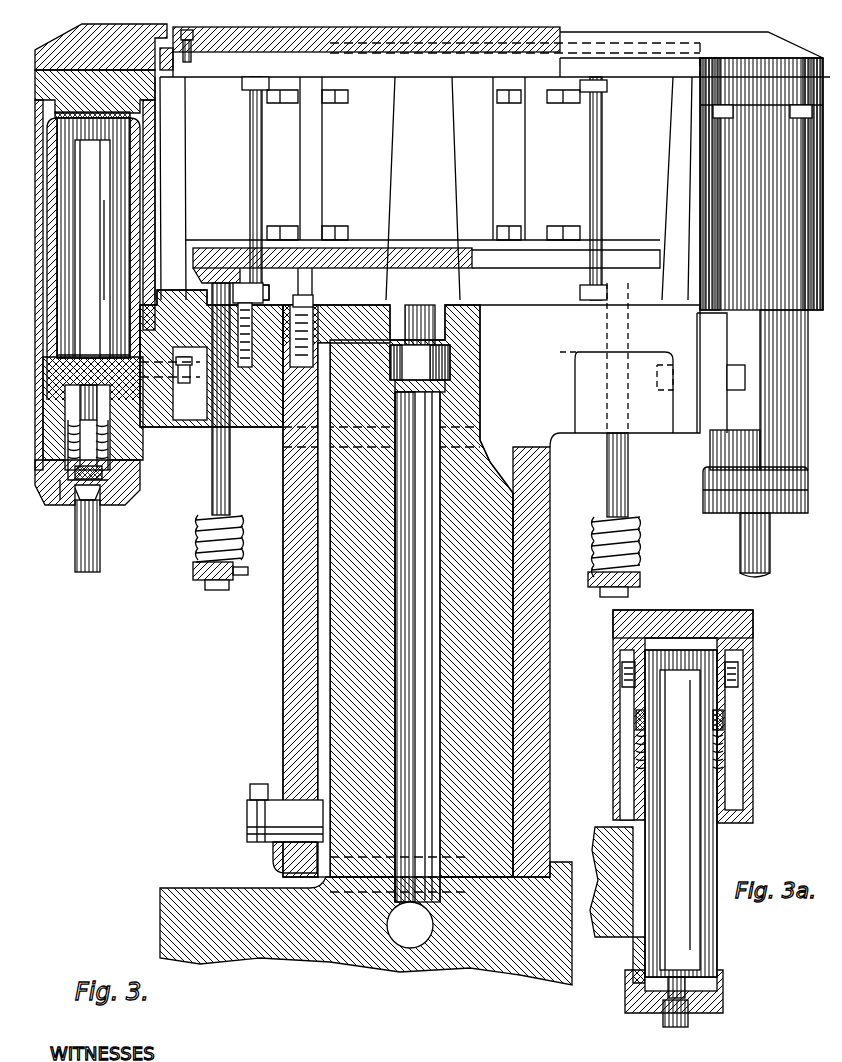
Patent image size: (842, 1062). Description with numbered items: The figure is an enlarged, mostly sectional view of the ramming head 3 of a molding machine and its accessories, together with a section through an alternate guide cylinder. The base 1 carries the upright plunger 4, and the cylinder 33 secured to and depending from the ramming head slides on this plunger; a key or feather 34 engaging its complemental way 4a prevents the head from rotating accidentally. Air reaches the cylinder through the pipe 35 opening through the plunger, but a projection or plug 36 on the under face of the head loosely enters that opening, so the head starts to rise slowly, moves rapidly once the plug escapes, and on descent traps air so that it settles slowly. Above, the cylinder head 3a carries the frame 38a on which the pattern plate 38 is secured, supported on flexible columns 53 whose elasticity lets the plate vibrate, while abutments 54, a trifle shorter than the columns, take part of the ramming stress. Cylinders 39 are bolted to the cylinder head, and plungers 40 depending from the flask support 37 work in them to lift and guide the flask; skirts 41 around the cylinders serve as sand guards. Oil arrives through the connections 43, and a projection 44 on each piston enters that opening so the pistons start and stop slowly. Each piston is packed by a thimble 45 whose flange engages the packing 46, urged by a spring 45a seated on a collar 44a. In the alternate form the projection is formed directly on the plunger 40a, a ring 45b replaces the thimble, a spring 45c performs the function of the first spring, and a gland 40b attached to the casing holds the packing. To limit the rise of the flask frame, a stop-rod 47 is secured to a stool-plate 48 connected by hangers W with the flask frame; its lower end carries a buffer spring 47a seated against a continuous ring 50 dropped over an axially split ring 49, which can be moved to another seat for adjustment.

In FIG. 3, the base 1 is at (366, 921).
In FIG. 3, the ramming head 3 is at (464, 20).
In FIG. 3, the cylinder head 3a is at (586, 358).
In FIG. 3, the plunger 4 is at (338, 610).
In FIG. 3, the complemental way 4a is at (318, 705).
In FIG. 3, the cylinder 33 is at (531, 662).
In FIG. 3, the key or feather 34 is at (285, 828).
In FIG. 3, the pipe 35 is at (410, 925).
In FIG. 3, the projection or plug 36 is at (420, 348).
In FIG. 3, the flask support 37 is at (126, 31).
In FIG. 3, the pattern plate 38 is at (491, 52).
In FIG. 3, the frame 38a is at (495, 64).
In FIG. 3, the cylinder 39 is at (132, 437).
In FIG. 3a, the cylinder 39 is at (735, 960).
In FIG. 3, the plunger 40 is at (93, 259).
In FIG. 3a, the plunger 40a is at (681, 813).
In FIG. 3a, the gland 40b is at (728, 705).
In FIG. 3, the skirt 41 is at (148, 190).
In FIG. 3, the connection 43 is at (422, 538).
In FIG. 3a, the connection 43 is at (675, 1013).
In FIG. 3, the projection 44 is at (100, 500).
In FIG. 3a, the projection 44 is at (683, 985).
In FIG. 3, the collar 44a is at (75, 495).
In FIG. 3, the thimble 45 is at (105, 470).
In FIG. 3, the spring 45a is at (70, 480).
In FIG. 3a, the ring 45b is at (725, 725).
In FIG. 3a, the spring 45c is at (723, 758).
In FIG. 3, the packing 46 is at (112, 460).
In FIG. 3, the stop-rod 47 is at (222, 475).
In FIG. 3, the spring 47a is at (200, 530).
In FIG. 3, the stool-plate 48 is at (365, 250).
In FIG. 3, the axially split ring 49 is at (205, 586).
In FIG. 3, the continuous ring 50 is at (190, 571).
In FIG. 3, the flexible columns 53 is at (250, 176).
In FIG. 3, the abutments 54 is at (423, 188).
In FIG. 3, the brackets or hangers W is at (315, 160).